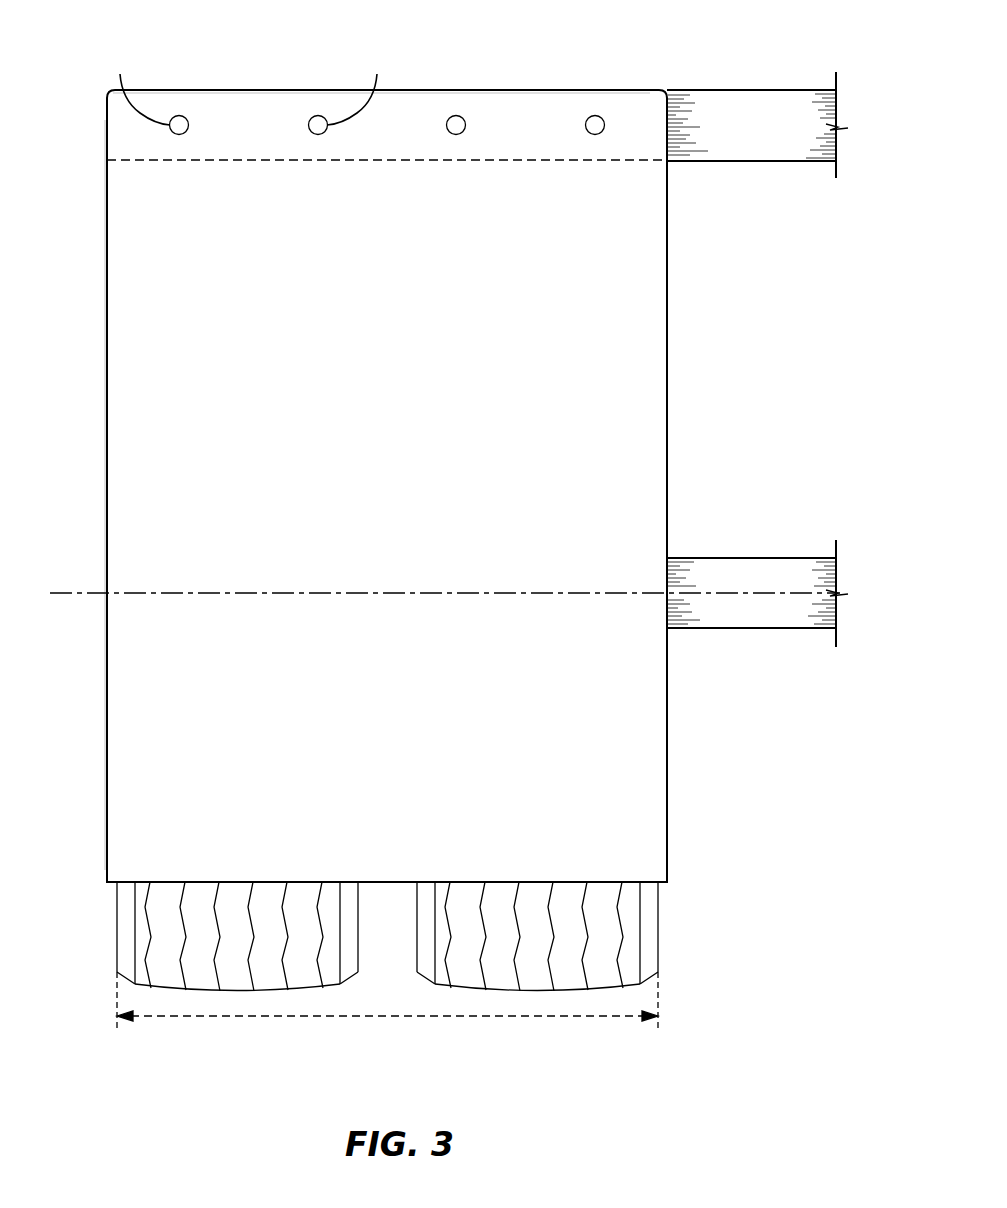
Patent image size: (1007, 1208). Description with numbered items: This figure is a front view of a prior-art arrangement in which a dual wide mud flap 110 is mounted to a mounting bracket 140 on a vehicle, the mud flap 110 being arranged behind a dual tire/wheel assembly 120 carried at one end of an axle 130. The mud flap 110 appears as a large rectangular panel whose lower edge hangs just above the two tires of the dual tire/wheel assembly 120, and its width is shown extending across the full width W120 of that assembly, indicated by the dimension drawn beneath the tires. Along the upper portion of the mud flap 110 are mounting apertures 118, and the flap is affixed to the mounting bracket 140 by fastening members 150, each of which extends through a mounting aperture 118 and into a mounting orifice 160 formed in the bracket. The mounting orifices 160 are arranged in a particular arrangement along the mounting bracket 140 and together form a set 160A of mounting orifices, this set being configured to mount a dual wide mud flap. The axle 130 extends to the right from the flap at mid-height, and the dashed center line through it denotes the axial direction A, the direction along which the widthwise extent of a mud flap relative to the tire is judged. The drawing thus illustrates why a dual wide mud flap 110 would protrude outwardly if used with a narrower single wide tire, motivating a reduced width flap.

The dual wide mud flap 110 is at (668, 528).
The mounting aperture 118 is at (177, 135).
The dual tire/wheel assembly 120 is at (659, 912).
The axle 130 is at (782, 558).
The mounting bracket 140 is at (740, 90).
The fastening member 150 is at (182, 116).
The mounting orifice 160 is at (254, 86).
The set of mounting orifices 160A is at (254, 86).
The axial direction A is at (367, 593).
The width of dual tire/wheel assembly W120 is at (243, 1017).